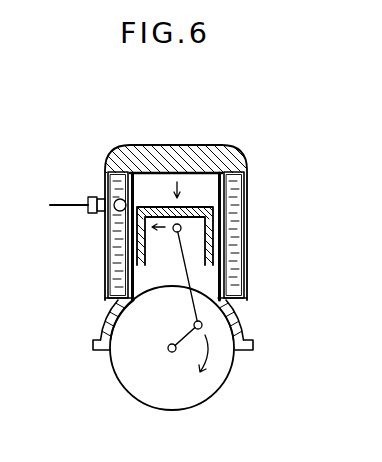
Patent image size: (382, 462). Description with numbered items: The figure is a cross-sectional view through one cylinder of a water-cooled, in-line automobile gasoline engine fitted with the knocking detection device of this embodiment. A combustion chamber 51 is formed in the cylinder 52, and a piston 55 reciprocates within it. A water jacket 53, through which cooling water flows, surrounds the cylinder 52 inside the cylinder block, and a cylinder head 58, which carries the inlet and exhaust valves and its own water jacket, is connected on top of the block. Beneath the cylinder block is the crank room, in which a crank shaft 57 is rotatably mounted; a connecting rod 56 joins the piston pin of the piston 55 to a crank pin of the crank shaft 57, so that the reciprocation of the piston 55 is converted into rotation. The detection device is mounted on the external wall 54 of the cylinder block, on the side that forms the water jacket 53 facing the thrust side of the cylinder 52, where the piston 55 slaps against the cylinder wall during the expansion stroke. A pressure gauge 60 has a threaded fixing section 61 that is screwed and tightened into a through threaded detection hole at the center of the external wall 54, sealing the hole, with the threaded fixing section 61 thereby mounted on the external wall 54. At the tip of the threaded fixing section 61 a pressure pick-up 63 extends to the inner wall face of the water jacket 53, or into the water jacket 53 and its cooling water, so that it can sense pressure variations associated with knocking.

The combustion chamber 51 is at (202, 188).
The cylinder 52 is at (147, 165).
The water jacket 53 is at (105, 282).
The external wall 54 is at (104, 183).
The piston 55 is at (214, 205).
The connecting rod 56 is at (191, 289).
The crank shaft 57 is at (170, 350).
The cylinder head 58 is at (185, 147).
The pressure gauge 60 is at (86, 194).
The threaded fixing section 61 is at (98, 213).
The pressure pick-up 63 is at (105, 240).